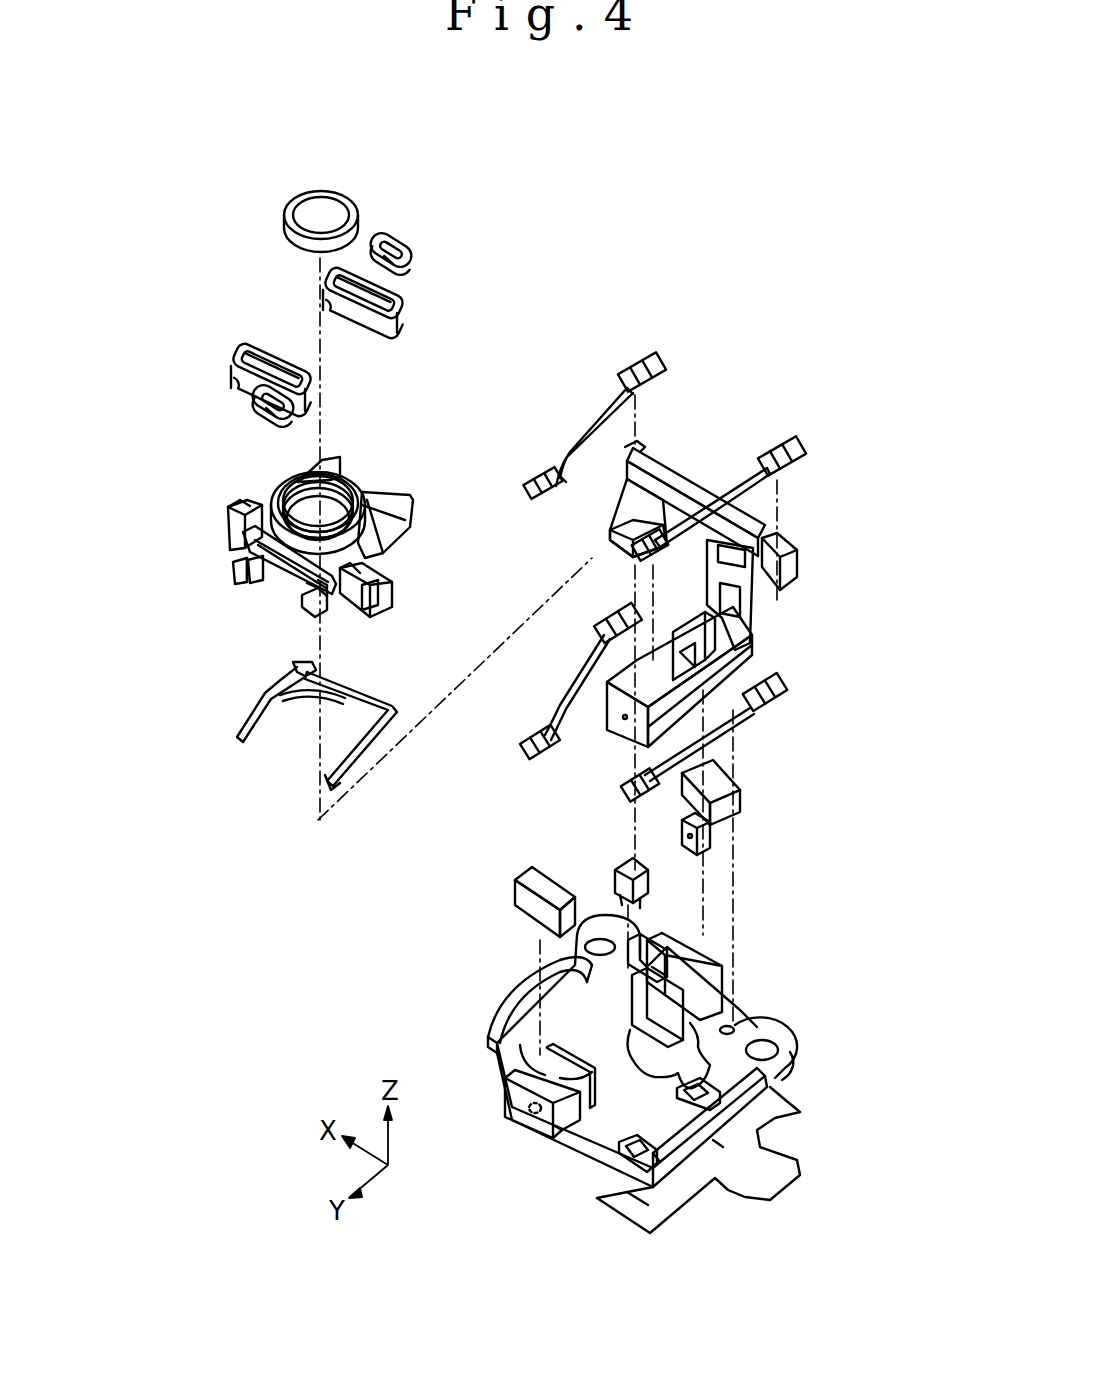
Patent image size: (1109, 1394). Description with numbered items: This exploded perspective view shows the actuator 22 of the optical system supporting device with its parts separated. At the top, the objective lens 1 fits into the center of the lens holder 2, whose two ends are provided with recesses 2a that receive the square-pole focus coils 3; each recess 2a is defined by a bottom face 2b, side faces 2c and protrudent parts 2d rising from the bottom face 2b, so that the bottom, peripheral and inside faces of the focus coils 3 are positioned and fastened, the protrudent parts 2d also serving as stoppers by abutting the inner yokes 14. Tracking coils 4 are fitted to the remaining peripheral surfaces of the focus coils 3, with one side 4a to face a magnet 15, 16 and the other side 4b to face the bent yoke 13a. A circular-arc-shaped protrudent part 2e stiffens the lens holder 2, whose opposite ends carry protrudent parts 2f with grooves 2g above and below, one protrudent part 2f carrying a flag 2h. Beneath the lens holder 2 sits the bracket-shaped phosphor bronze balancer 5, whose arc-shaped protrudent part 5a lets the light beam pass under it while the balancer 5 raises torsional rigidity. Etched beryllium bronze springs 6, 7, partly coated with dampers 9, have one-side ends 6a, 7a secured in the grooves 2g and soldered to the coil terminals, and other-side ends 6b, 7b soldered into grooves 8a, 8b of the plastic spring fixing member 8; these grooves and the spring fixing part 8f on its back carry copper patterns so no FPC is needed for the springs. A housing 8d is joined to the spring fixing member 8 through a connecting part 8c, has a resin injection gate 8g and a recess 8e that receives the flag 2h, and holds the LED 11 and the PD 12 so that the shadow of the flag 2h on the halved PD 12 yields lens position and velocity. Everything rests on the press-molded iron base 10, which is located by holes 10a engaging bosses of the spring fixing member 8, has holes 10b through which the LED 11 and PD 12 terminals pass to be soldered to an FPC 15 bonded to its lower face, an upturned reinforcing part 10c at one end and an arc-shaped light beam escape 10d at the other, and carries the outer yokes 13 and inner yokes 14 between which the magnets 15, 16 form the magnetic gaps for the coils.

The objective lens 1 is at (328, 212).
The lens holder 2 is at (385, 505).
The recess 2a is at (350, 478).
The bottom face 2b is at (250, 580).
The side face 2c is at (238, 570).
The protrudent part 2d is at (262, 598).
The protrudent part 2e is at (300, 482).
The protrudent part 2f is at (232, 520).
The groove 2g is at (240, 497).
The flag 2h is at (395, 598).
The focus coil 3 is at (405, 318).
The tracking coil 4 is at (402, 238).
The one side of tracking coil 4a is at (405, 258).
The other side of tracking coil 4b is at (378, 235).
The balancer 5 is at (350, 692).
The protrudent part 5a is at (262, 705).
The spring 6 is at (590, 412).
The one-side end of spring 6a is at (528, 490).
The other-side end of spring 6b is at (660, 365).
The spring 7 is at (560, 672).
The one-side end of spring 7a is at (632, 795).
The other-side end of spring 7b is at (625, 608).
The spring fixing member 8 is at (770, 615).
The groove 8a is at (645, 455).
The groove 8b is at (625, 505).
The connecting part 8c is at (755, 640).
The housing 8d is at (700, 690).
The recess 8e is at (673, 655).
The spring fixing part 8f is at (770, 512).
The resin injection gate 8g is at (622, 717).
The damper 9 is at (550, 472).
The base 10 is at (790, 1012).
The hole 10a is at (690, 940).
The hole 10b is at (722, 1093).
The reinforcing part 10c is at (760, 1112).
The light beam escape 10d is at (492, 1020).
The LED 11 is at (712, 840).
The PD 12 is at (622, 868).
The outer yoke 13 is at (520, 1125).
The yoke 13a is at (563, 1130).
The inner yoke 14 is at (655, 1020).
The magnet 15 is at (742, 800).
The magnet 16 is at (525, 905).
The actuator 22 is at (345, 902).